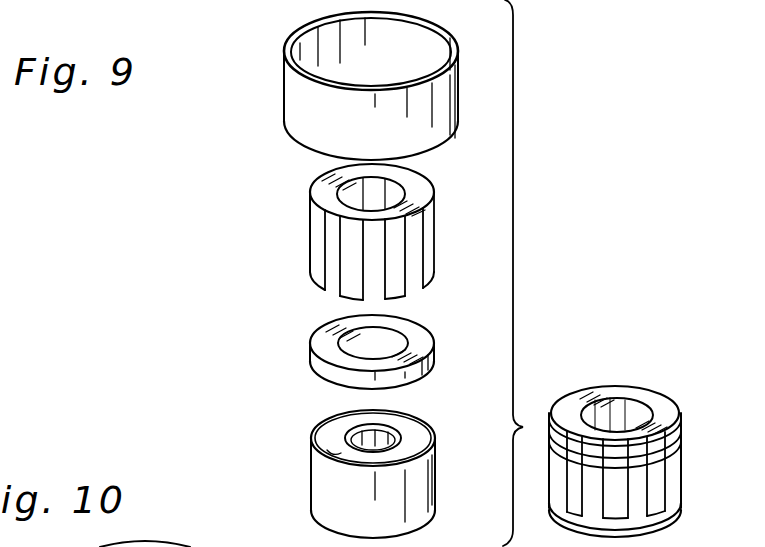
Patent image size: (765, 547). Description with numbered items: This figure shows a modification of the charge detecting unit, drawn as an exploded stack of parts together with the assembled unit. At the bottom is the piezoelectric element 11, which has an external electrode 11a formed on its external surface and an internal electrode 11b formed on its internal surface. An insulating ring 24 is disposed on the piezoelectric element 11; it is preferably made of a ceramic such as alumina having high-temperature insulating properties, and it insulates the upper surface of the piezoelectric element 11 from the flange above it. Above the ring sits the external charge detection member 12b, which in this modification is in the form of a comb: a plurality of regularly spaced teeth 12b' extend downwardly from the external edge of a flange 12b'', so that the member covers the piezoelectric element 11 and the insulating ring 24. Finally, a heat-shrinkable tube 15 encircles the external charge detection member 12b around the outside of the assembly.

The heat-shrinkable tube 15 is at (284, 103).
The external charge detection member 12b is at (313, 232).
The teeth 12b' is at (251, 253).
The flange 12b'' is at (274, 189).
The insulating ring 24 is at (318, 365).
The piezoelectric element 11 is at (326, 446).
The external electrode 11a is at (320, 440).
The internal electrode 11b is at (352, 427).